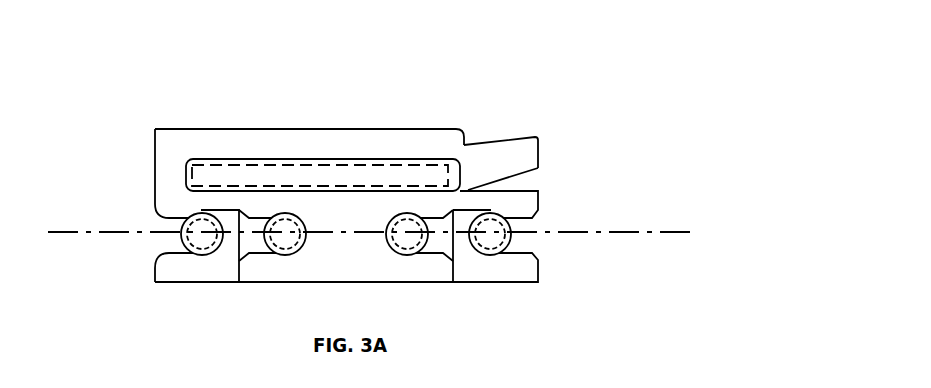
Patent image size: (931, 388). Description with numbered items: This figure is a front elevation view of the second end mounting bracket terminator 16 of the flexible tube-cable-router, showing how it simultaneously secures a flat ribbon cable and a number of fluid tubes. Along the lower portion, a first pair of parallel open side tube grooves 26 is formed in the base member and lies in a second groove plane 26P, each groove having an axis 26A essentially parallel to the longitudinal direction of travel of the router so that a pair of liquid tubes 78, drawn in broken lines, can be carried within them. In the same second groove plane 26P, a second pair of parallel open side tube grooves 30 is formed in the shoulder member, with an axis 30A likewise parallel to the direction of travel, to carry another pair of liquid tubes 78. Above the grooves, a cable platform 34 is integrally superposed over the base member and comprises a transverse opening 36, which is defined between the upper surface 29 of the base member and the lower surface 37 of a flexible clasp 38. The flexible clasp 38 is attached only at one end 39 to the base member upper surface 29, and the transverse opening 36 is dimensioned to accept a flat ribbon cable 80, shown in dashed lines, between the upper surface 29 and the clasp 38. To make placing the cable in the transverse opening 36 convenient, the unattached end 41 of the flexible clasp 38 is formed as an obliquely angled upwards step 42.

The second end mounting bracket terminator 16 is at (678, 92).
The cable platform 34 is at (180, 108).
The transverse opening 36 is at (355, 157).
The lower surface of flexible clasp 37 is at (208, 157).
The flexible clasp 38 is at (393, 129).
The attached end of flexible clasp 39 is at (155, 185).
The unattached end of flexible clasp 41 is at (538, 150).
The obliquely angled upwards step 42 is at (518, 147).
The flat ribbon cable 80 is at (265, 165).
The upper surface of base member 29 is at (317, 193).
The first pair of parallel open side tube grooves 26 is at (268, 268).
The axis of first tube grooves 26A is at (284, 243).
The second groove plane 26P is at (393, 237).
The second pair of parallel open side tube grooves 30 is at (156, 246).
The axis of second tube grooves 30A is at (201, 243).
The liquid tubes 78 is at (182, 240).